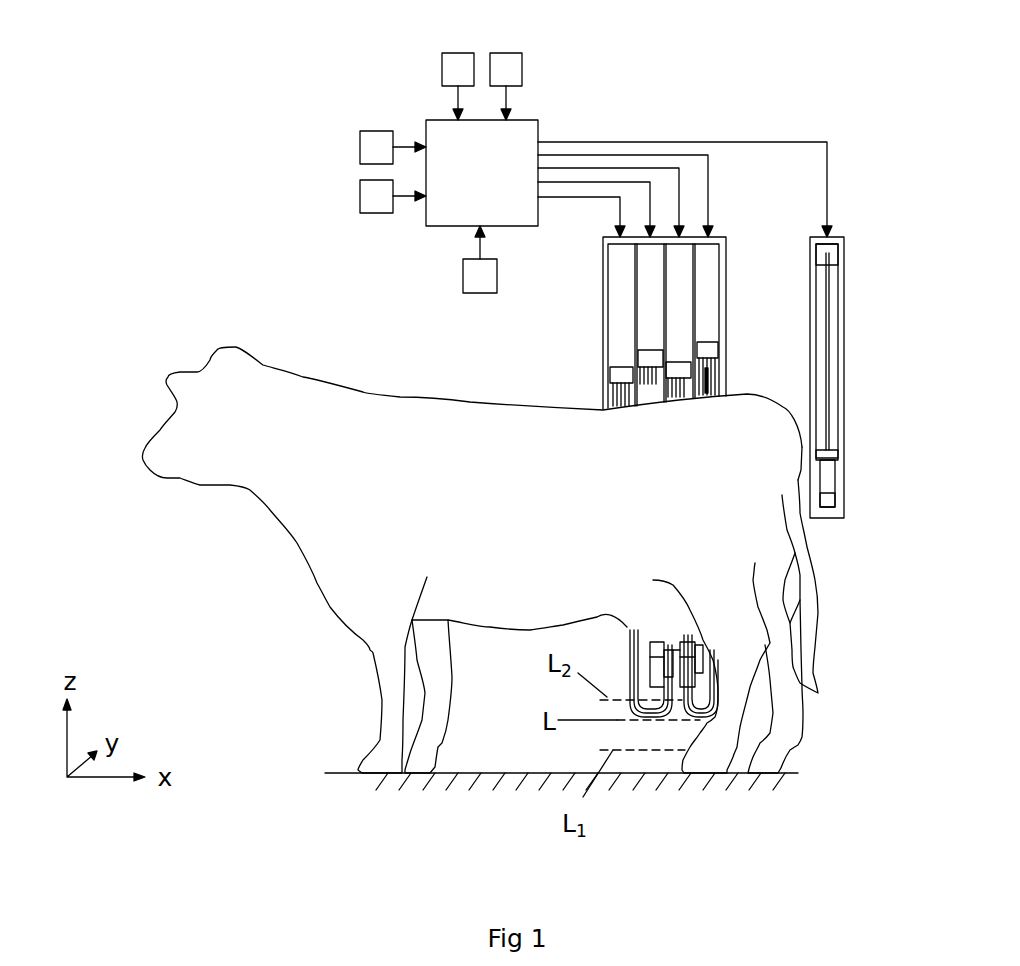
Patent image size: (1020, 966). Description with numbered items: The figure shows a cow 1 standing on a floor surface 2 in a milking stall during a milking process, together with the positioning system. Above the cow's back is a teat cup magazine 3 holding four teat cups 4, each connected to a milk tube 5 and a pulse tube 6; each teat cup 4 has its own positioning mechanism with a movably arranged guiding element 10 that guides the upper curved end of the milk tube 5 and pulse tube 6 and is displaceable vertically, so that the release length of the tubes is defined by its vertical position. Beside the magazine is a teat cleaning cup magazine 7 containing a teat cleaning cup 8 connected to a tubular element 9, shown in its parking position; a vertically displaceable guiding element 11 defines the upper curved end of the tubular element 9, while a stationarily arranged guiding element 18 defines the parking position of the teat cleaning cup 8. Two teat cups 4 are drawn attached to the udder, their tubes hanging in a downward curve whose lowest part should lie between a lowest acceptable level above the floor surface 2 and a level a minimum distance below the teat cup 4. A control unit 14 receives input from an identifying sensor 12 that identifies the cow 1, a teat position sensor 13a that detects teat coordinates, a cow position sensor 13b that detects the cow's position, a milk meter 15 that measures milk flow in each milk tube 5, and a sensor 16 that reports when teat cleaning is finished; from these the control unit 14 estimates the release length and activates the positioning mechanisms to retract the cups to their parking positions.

The cow 1 is at (347, 427).
The floor surface 2 is at (463, 773).
The teat cup magazine 3 is at (602, 307).
The teat cup 4 is at (688, 650).
The milk tube 5 is at (705, 395).
The pulse tube 6 is at (713, 385).
The teat cleaning cup magazine 7 is at (840, 288).
The teat cleaning cup 8 is at (826, 480).
The tubular element 9 is at (828, 378).
The guiding element 10 is at (712, 350).
The guiding element 11 is at (820, 253).
The identifying sensor 12 is at (477, 282).
The teat position sensor 13a is at (372, 147).
The cow position sensor 13b is at (373, 195).
The control unit 14 is at (508, 147).
The milk meter 15 is at (453, 68).
The sensor 16 is at (508, 69).
The stationarily arranged guiding element 18 is at (826, 455).